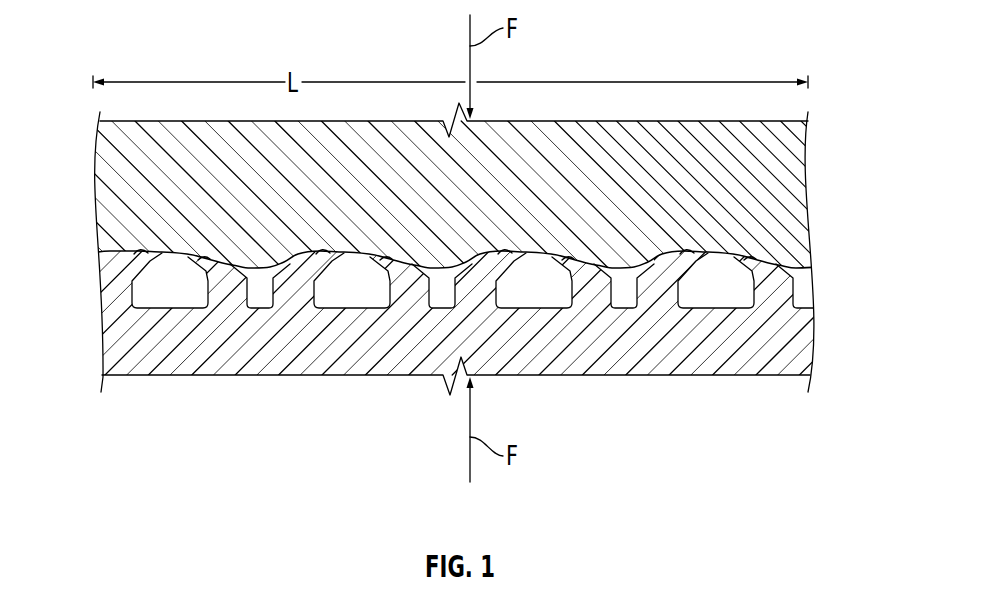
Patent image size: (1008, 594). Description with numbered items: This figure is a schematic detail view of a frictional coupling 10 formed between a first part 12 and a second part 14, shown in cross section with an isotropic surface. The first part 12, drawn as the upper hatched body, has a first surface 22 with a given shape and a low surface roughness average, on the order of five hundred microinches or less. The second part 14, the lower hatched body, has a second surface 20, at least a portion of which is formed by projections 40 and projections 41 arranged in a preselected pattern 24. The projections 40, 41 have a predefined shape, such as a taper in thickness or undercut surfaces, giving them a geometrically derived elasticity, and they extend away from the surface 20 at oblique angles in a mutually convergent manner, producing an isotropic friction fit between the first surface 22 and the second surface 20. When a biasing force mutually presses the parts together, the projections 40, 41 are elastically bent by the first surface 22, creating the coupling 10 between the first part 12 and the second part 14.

The frictional coupling 10 is at (822, 265).
The first part 12 is at (623, 138).
The second part 14 is at (666, 358).
The second surface 20 is at (440, 305).
The first surface 22 is at (250, 310).
The preselected pattern 24 is at (153, 235).
The projections 40 is at (140, 252).
The projections 41 is at (204, 258).